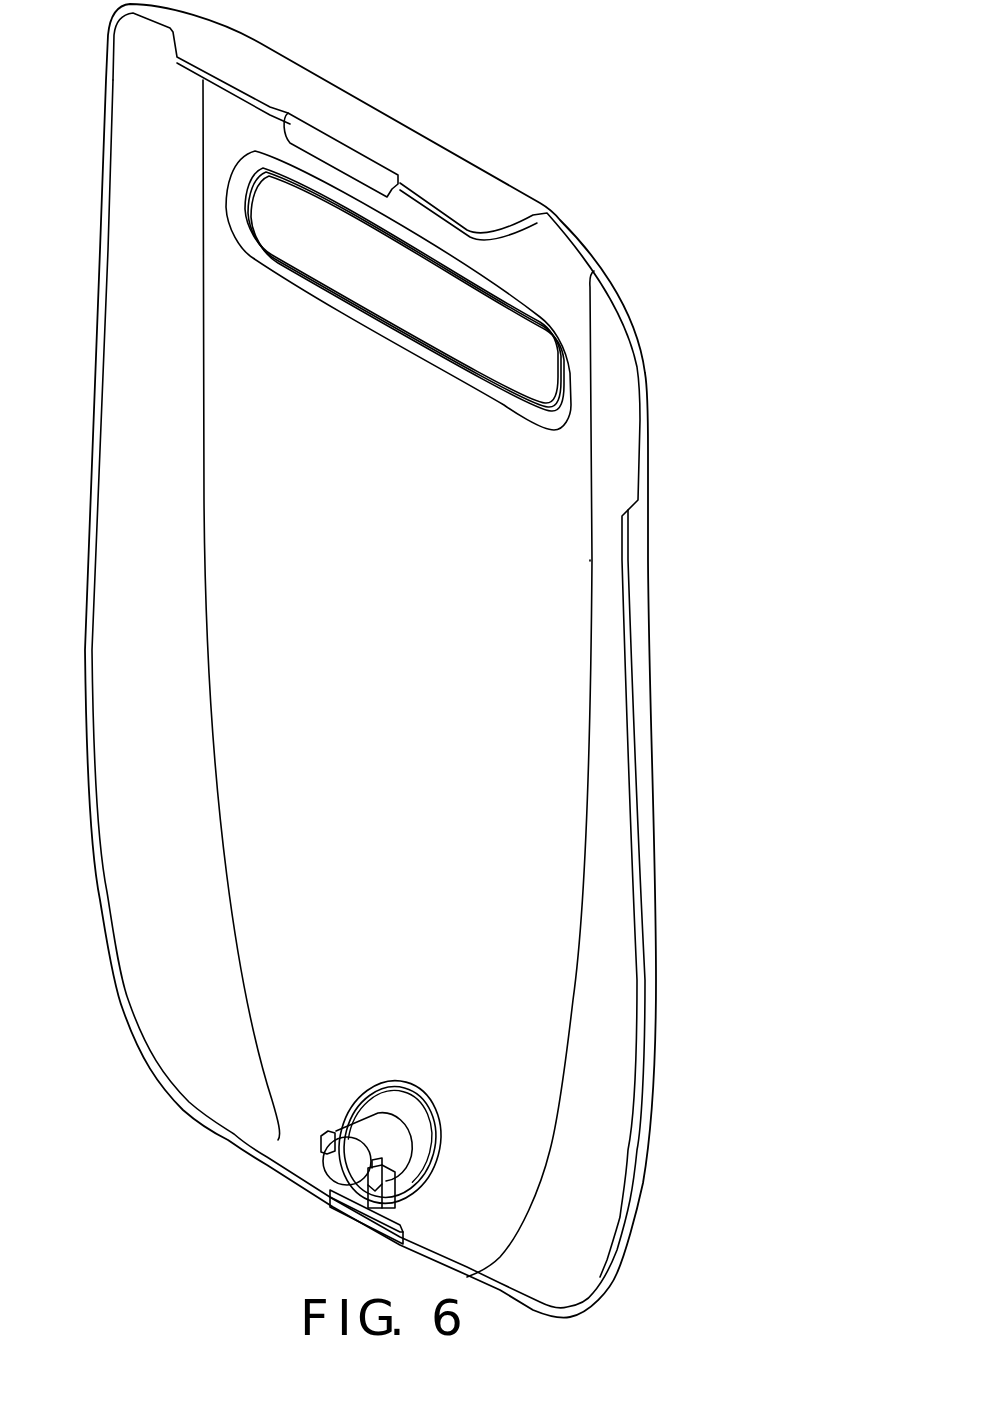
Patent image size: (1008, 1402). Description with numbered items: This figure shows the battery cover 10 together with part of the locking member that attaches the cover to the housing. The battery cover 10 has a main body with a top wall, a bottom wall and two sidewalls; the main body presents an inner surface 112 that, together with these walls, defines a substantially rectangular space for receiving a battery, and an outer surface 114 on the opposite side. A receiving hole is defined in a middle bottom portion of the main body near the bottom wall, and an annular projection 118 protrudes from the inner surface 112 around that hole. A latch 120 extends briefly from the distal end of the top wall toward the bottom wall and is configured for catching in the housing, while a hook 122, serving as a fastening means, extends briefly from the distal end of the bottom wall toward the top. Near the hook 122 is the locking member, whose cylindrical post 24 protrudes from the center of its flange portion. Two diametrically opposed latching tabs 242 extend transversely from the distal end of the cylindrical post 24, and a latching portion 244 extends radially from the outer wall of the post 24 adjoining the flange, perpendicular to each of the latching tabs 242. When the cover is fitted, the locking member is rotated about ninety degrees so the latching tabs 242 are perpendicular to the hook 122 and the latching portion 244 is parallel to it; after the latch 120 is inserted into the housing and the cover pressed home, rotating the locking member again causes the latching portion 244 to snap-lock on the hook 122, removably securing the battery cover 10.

The battery cover 10 is at (668, 552).
The inner surface 112 is at (610, 762).
The outer surface 114 is at (398, 290).
The annular projection 118 is at (408, 1107).
The latch 120 is at (342, 158).
The hook 122 is at (405, 1236).
The cylindrical post 24 is at (388, 1145).
The latching tabs 242 is at (320, 1138).
The latching portion 244 is at (393, 1203).